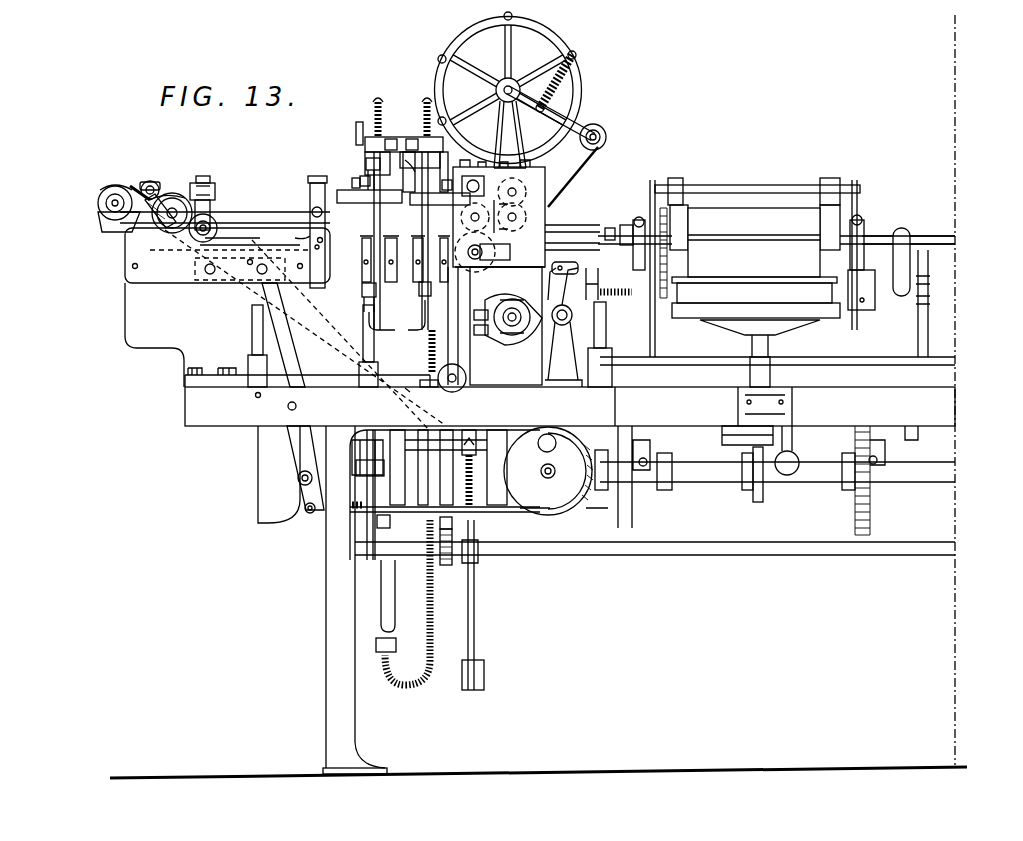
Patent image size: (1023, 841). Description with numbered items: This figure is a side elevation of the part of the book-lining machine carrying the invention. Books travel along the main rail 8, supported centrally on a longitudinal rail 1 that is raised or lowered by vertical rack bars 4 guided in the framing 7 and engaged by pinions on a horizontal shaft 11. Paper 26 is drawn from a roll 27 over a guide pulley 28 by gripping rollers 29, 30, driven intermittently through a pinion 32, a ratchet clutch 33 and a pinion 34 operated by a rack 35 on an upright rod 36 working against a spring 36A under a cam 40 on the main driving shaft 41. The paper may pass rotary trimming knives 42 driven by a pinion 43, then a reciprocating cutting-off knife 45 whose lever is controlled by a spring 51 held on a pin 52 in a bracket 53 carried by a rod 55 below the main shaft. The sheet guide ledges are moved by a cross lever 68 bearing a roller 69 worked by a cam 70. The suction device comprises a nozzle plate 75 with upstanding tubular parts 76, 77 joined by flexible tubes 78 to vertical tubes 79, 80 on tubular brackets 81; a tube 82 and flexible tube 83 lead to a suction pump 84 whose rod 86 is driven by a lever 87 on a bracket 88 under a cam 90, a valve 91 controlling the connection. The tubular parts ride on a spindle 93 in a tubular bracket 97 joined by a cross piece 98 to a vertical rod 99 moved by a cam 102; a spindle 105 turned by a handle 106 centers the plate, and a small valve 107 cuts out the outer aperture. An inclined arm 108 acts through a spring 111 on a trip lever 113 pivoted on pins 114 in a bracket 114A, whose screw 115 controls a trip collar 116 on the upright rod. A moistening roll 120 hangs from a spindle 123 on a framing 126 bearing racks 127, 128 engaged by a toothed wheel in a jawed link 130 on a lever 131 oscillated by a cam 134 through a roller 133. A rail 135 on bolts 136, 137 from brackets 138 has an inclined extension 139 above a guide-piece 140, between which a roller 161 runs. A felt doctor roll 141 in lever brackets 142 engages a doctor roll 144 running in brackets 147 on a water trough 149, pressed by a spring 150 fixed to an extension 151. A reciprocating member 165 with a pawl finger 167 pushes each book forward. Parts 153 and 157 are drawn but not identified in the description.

The longitudinal rail 1 is at (866, 350).
The vertical rack bars 4 is at (606, 328).
The framing 7 is at (570, 406).
The main rail 8 is at (237, 335).
The horizontal shaft 11 is at (808, 340).
The paper 26 is at (573, 177).
The roll 27 is at (584, 92).
The guide pulley 28 is at (594, 126).
The rotary gripping roller 29 is at (499, 213).
The rotary gripping roller 30 is at (475, 214).
The pinion 32 is at (495, 326).
The ratchet clutch 33 is at (500, 256).
The pinion 34 is at (482, 251).
The rack 35 is at (507, 316).
The upright rod 36 is at (458, 520).
The spring 36A is at (489, 545).
The cam 40 is at (475, 512).
The main driving shaft 41 is at (915, 492).
The rotary trimming knives 42 is at (528, 214).
The pinion 43 is at (528, 196).
The cutting off knife 45 is at (447, 178).
The spring 51 is at (440, 536).
The pin 52 is at (452, 485).
The bracket 53 is at (468, 608).
The rod 55 is at (905, 566).
The cross lever 68 is at (431, 390).
The roller 69 is at (409, 393).
The cam 70 is at (422, 470).
The nozzle plate 75 is at (399, 190).
The upstanding tubular part 76 is at (346, 179).
The upstanding tubular part 77 is at (413, 172).
The flexible tubes 78 is at (420, 104).
The vertical tube 79 is at (368, 168).
The vertical tube 80 is at (448, 158).
The tubular brackets 81 is at (440, 292).
The tube 82 is at (412, 320).
The flexible tube 83 is at (432, 635).
The suction pump 84 is at (381, 594).
The rod 86 is at (372, 530).
The lever 87 is at (356, 478).
The bracket 88 is at (352, 456).
The cam 90 is at (383, 521).
The valve 91 is at (381, 297).
The spindle 93 is at (392, 144).
The tubular bracket 97 is at (413, 161).
The cross piece 98 is at (415, 144).
The vertical rod 99 is at (405, 342).
The cam 102 is at (218, 238).
The spindle 105 is at (393, 137).
The handle 106 is at (356, 130).
The small valve 107 is at (359, 178).
The inclined arm 108 is at (610, 275).
The spring 111 is at (573, 260).
The trip lever 113 is at (558, 327).
The pins 114 is at (512, 298).
The bracket 114A is at (509, 325).
The vertical screw 115 is at (484, 312).
The trip collar 116 is at (484, 326).
The roll 120 is at (172, 193).
The spindle 123 is at (218, 228).
The framing 126 is at (227, 255).
The rack 127 is at (462, 392).
The rack 128 is at (280, 284).
The jawed link 130 is at (250, 250).
The lever 131 is at (298, 458).
The roller 133 is at (298, 478).
The cam 134 is at (286, 474).
The rail 135 is at (268, 212).
The bolt 136 is at (215, 186).
The bolt 137 is at (308, 183).
The brackets 138 is at (210, 176).
The inclined extension 139 is at (212, 194).
The inclined guide-piece 140 is at (212, 203).
The doctor roll 141 is at (146, 182).
The lever bracket 142 is at (128, 186).
The doctor roll 144 is at (102, 190).
The bracket 147 is at (98, 203).
The water trough 149 is at (98, 221).
The spring 150 is at (152, 181).
The extension 151 is at (146, 200).
The link 153 is at (390, 404).
The pulley 157 is at (556, 471).
The roller 161 is at (186, 197).
The reciprocating member 165 is at (572, 226).
The pawl finger 167 is at (556, 250).